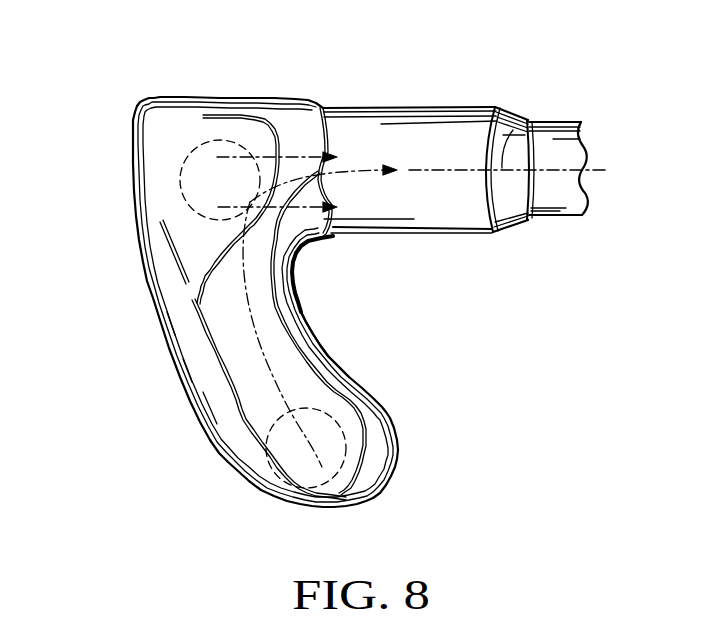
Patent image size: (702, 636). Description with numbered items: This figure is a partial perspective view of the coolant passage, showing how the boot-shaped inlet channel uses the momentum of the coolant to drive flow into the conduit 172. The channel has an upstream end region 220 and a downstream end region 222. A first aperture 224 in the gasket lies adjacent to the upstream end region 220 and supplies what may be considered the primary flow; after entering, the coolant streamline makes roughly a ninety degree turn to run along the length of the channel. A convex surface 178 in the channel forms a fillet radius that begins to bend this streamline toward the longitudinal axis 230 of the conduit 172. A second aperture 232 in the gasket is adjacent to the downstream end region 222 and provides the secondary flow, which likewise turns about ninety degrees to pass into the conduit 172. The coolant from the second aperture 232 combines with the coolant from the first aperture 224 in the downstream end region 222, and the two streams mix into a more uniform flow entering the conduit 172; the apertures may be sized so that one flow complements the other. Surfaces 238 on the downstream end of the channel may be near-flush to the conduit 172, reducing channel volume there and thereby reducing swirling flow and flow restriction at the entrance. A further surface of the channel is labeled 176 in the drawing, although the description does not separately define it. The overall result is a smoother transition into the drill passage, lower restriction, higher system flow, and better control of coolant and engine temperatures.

The upstream end region 220 is at (242, 493).
The downstream end region 222 is at (177, 57).
The first aperture 224 is at (267, 430).
The longitudinal axis 230 is at (512, 134).
The second aperture 232 is at (200, 149).
The surfaces 238 is at (220, 97).
The conduit 172 is at (553, 192).
The trigger guard surface 176 is at (296, 292).
The convex surface 178 is at (309, 330).